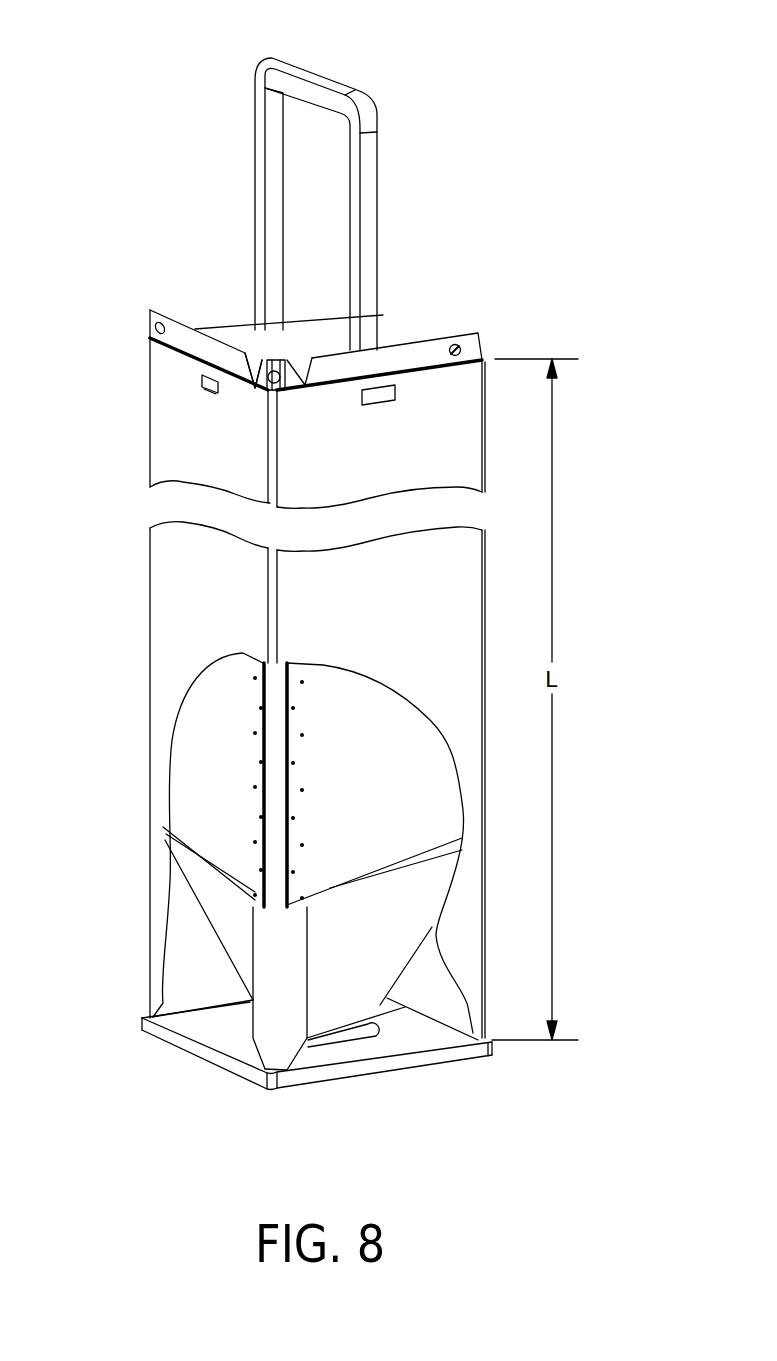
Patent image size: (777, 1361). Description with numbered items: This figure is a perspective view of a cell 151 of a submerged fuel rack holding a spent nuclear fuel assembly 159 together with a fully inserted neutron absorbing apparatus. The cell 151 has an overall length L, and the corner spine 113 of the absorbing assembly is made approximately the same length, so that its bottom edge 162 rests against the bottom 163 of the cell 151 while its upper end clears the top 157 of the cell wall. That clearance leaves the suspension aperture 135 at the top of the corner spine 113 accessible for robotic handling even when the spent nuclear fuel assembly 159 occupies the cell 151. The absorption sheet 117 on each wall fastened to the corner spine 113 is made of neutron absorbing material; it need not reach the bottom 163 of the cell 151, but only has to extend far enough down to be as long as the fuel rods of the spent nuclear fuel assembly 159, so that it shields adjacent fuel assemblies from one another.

The spent nuclear fuel assembly 159 is at (378, 113).
The cell 151 is at (163, 612).
The top of the cell wall 157 is at (474, 359).
The corner spine 113 is at (294, 362).
The suspension aperture 135 is at (266, 358).
The absorption sheet 117 is at (200, 797).
The bottom edge 162 is at (288, 1071).
The bottom of the cell 163 is at (347, 1057).